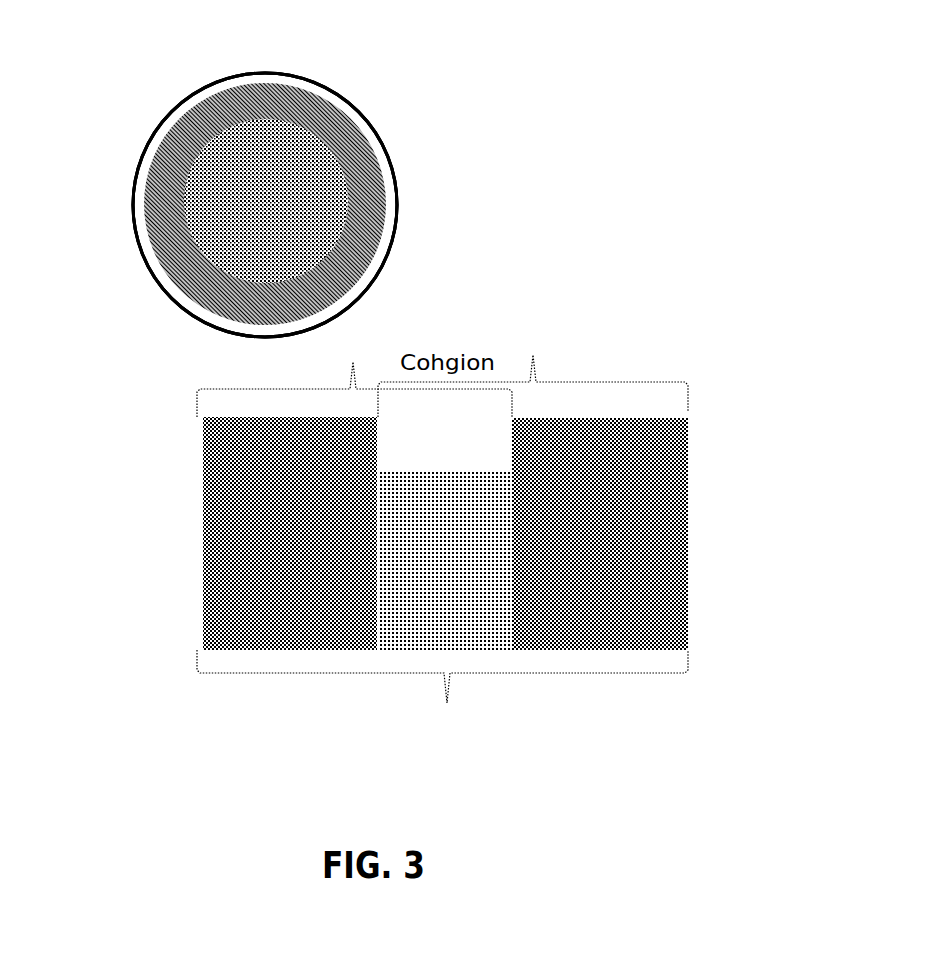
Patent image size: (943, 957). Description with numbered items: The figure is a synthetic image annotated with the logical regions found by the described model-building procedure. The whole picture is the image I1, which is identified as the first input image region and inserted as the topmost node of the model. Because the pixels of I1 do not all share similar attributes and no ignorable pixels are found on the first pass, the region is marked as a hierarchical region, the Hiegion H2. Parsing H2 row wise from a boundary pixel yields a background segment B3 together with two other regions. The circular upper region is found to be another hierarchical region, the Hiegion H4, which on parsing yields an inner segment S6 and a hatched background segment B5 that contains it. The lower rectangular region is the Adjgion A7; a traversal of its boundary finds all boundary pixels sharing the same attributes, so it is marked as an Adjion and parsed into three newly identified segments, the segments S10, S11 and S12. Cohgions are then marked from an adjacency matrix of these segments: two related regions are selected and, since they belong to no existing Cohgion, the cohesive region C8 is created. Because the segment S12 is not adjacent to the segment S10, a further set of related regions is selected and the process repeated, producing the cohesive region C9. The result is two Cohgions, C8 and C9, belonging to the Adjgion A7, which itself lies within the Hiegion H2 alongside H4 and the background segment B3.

The image I1 is at (237, 182).
The hierarchical region H2 is at (418, 184).
The hierarchical region H4 is at (382, 143).
The background segment B5 is at (365, 200).
The segment S6 is at (267, 257).
The cohesive region C8 is at (354, 378).
The cohesive region C9 is at (533, 371).
The segment S10 is at (290, 533).
The segment S11 is at (445, 560).
The segment S12 is at (600, 534).
The adjacent region A7 is at (442, 695).
The background segment B3 is at (162, 775).